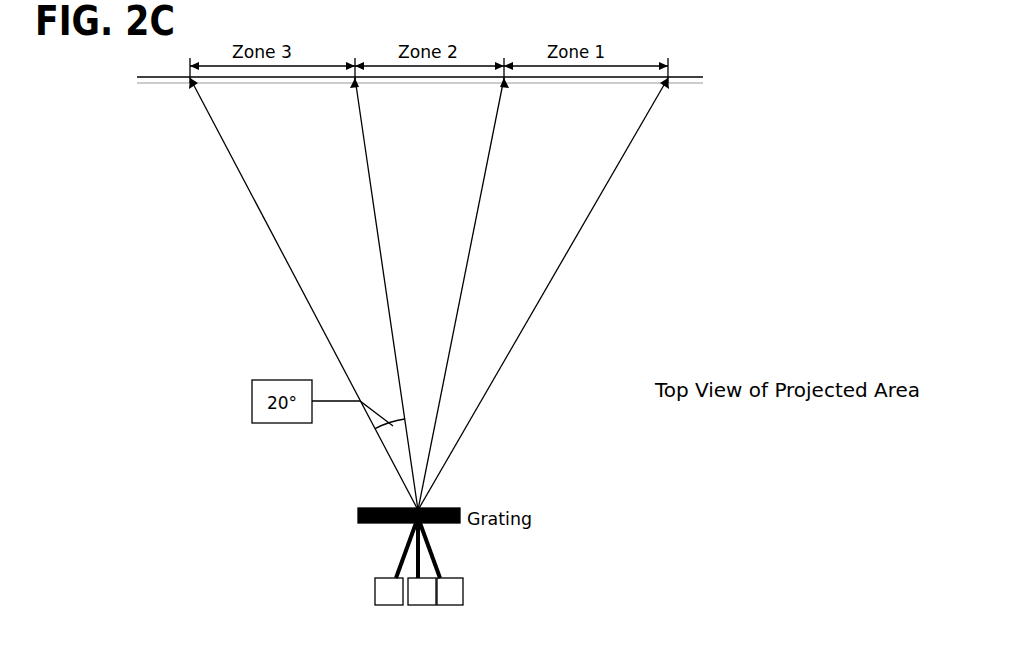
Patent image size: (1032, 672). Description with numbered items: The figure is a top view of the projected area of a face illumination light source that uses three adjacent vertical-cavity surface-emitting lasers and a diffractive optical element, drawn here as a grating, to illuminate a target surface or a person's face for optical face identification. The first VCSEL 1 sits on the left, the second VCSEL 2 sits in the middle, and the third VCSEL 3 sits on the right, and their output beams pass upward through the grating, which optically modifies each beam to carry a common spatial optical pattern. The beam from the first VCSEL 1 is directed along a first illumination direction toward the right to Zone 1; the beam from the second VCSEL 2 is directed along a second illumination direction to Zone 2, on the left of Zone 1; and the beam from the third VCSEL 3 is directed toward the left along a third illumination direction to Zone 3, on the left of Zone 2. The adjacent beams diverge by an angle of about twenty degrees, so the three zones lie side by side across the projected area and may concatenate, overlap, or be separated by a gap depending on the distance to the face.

The VCSEL 1 is at (367, 581).
The VCSEL 2 is at (422, 581).
The VCSEL 3 is at (448, 581).